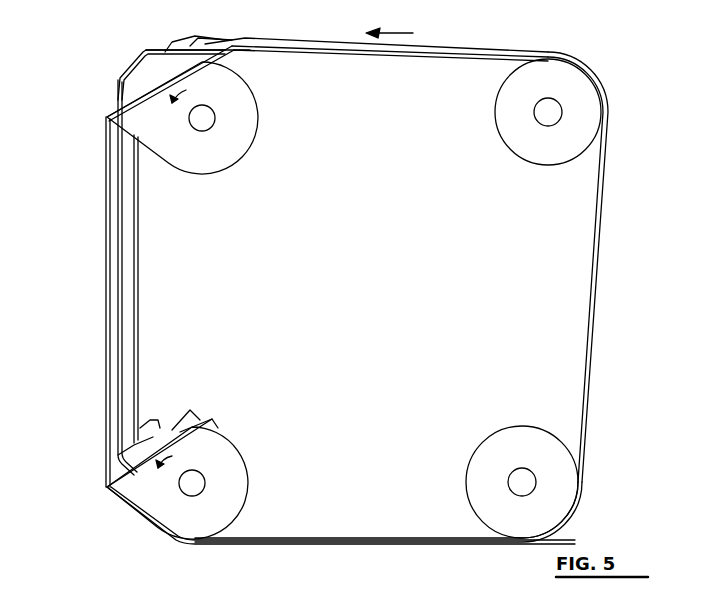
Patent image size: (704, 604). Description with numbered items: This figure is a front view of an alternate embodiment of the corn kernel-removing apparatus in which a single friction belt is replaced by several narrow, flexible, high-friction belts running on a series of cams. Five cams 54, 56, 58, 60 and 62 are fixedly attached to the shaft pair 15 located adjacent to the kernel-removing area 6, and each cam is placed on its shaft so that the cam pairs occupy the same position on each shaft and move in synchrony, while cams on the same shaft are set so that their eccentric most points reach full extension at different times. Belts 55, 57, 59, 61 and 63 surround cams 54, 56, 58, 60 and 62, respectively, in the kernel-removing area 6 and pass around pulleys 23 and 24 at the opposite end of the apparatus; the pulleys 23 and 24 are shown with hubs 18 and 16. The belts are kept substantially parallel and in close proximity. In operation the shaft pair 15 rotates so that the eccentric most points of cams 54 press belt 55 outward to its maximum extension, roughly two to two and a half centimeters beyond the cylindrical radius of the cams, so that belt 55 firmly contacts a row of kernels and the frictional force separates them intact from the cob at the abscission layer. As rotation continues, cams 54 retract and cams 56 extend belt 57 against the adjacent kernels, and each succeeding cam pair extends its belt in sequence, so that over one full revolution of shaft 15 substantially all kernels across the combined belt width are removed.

The kernel-removing area 6 is at (84, 249).
The shaft pair 15 is at (212, 124).
The roller hub 16 is at (512, 482).
The roller hub 18 is at (556, 118).
The pulley 23 is at (488, 445).
The pulley 24 is at (580, 75).
The cam 54 is at (206, 168).
The belt 55 is at (106, 353).
The cam 56 is at (135, 78).
The belt 57 is at (118, 297).
The cam 58 is at (152, 60).
The belt 59 is at (138, 284).
The cam 60 is at (182, 42).
The belt 61 is at (166, 45).
The cam 62 is at (245, 42).
The belt 63 is at (215, 38).